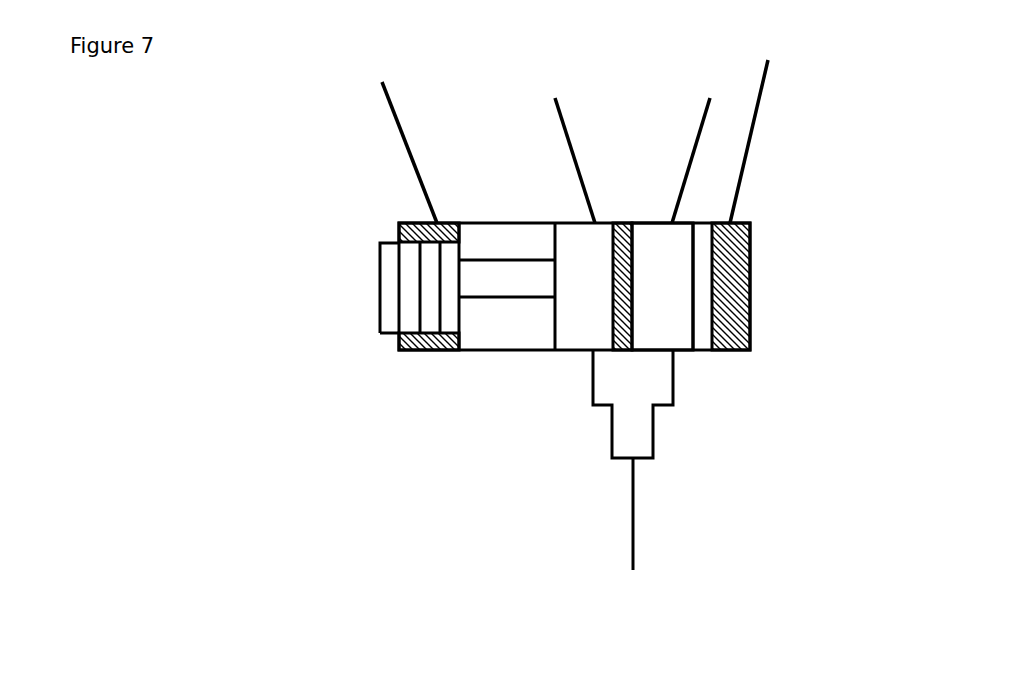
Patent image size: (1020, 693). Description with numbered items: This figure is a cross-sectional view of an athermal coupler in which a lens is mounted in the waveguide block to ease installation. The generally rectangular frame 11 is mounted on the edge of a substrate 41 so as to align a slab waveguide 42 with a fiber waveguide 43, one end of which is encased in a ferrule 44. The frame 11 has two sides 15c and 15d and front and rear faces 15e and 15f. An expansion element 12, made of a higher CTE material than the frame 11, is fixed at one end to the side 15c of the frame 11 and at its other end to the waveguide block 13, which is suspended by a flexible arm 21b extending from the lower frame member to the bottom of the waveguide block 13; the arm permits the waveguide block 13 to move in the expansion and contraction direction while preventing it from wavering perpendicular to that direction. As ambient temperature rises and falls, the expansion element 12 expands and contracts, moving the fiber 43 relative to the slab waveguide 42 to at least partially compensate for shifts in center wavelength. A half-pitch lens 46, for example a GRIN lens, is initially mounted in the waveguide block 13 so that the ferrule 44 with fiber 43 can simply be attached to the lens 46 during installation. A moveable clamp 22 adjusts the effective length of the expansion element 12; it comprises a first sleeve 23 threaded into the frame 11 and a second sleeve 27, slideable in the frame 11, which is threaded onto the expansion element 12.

The frame 11 is at (752, 242).
The expansion element 12 is at (518, 280).
The waveguide block 13 is at (672, 297).
The side 15c is at (397, 278).
The side 15d is at (752, 280).
The front face 15e is at (693, 352).
The rear face 15f is at (417, 223).
The flexible arm 21b is at (612, 283).
The moveable clamp 22 is at (377, 242).
The first sleeve 23 is at (382, 322).
The second sleeve 27 is at (437, 317).
The substrate 41 is at (500, 132).
The slab waveguide 42 is at (655, 132).
The fiber waveguide 43 is at (634, 495).
The ferrule 44 is at (633, 438).
The lens 46 is at (633, 370).